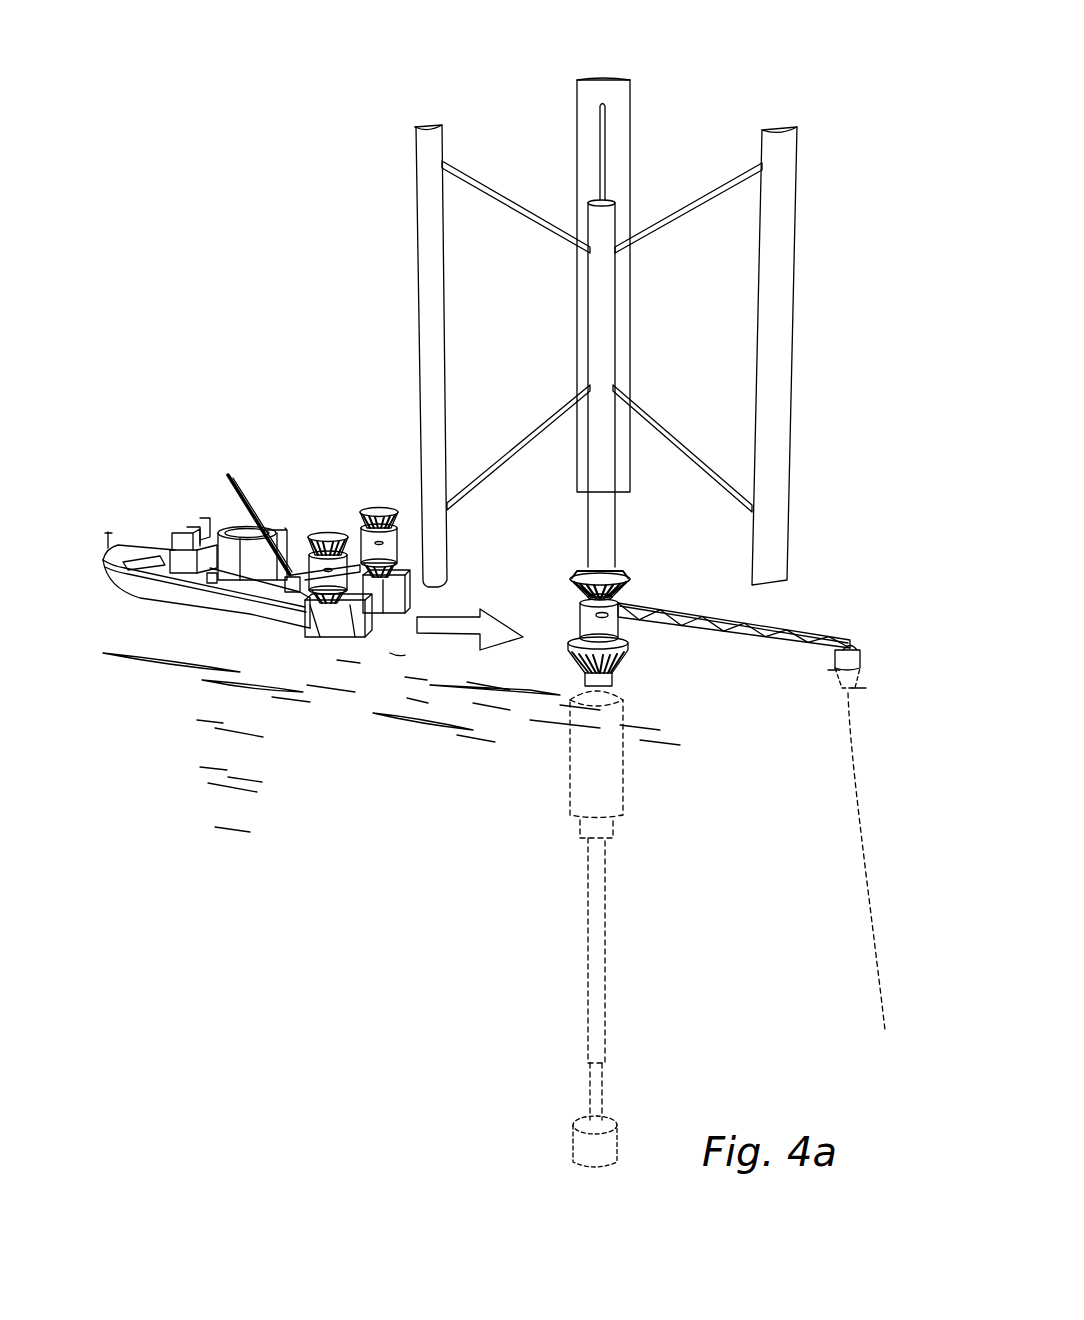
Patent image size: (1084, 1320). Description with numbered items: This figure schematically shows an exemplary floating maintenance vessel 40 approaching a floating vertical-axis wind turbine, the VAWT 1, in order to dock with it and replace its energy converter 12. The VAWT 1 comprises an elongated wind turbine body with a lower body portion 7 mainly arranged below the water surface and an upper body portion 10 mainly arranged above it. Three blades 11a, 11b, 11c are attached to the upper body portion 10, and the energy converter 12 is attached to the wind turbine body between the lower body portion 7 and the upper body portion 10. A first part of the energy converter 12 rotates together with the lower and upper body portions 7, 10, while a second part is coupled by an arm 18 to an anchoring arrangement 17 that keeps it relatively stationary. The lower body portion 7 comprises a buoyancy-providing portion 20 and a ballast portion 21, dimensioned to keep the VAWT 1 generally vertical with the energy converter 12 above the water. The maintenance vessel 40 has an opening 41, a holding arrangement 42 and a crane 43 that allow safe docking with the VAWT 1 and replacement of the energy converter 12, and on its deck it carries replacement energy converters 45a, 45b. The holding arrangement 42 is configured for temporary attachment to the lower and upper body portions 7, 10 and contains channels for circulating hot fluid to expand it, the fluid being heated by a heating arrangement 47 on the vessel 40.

The VAWT 1 is at (838, 139).
The upper body portion 10 is at (632, 299).
The blade 11a is at (421, 258).
The blade 11b is at (622, 115).
The blade 11c is at (780, 267).
The energy converter 12 is at (638, 577).
The anchoring arrangement 17 is at (851, 616).
The arm 18 is at (722, 635).
The buoyancy-providing portion 20 is at (603, 782).
The lower body portion 7 is at (606, 938).
The ballast portion 21 is at (610, 1143).
The maintenance vessel 40 is at (208, 477).
The opening 41 is at (380, 597).
The holding arrangement 42 is at (245, 557).
The crane 43 is at (253, 500).
The replacement energy converter 45a is at (312, 533).
The replacement energy converter 45b is at (380, 508).
The heating arrangement 47 is at (172, 542).